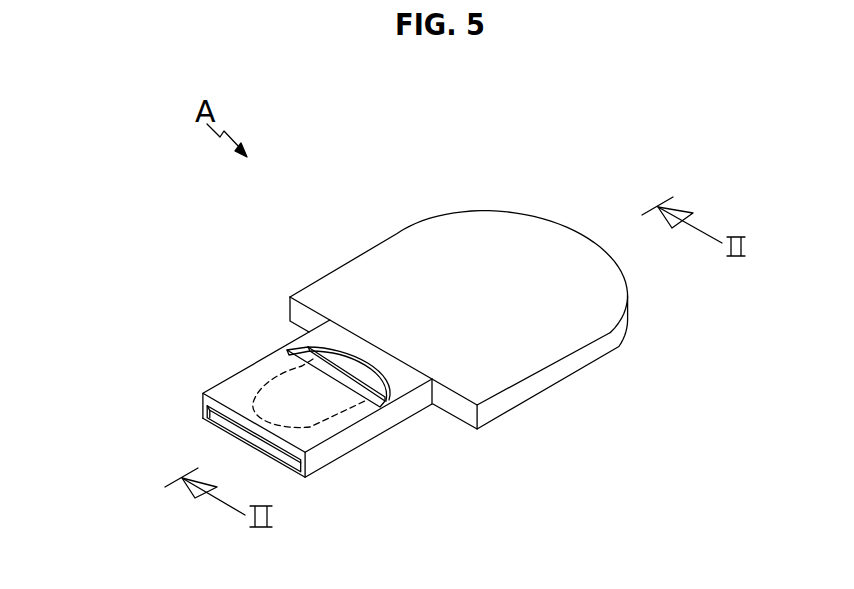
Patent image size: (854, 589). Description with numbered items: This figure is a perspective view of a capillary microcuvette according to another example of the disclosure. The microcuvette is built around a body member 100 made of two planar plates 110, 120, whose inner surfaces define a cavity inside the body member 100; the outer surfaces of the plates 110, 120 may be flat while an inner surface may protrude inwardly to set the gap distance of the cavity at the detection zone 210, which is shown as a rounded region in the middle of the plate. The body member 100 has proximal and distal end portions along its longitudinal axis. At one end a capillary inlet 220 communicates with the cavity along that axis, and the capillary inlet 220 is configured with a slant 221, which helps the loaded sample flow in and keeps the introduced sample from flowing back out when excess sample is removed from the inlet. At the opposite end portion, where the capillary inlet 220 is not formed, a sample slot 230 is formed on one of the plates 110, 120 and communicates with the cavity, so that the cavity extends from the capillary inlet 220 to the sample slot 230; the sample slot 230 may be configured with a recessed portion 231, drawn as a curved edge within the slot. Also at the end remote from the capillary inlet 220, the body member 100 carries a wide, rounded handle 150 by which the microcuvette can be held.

The body member 100 is at (403, 413).
The plate 110 is at (240, 406).
The plate 120 is at (205, 418).
The handle 150 is at (475, 237).
The detection zone 210 is at (322, 403).
The capillary inlet 220 is at (290, 454).
The slant 221 is at (207, 412).
The sample slot 230 is at (338, 378).
The recessed portion 231 is at (331, 357).